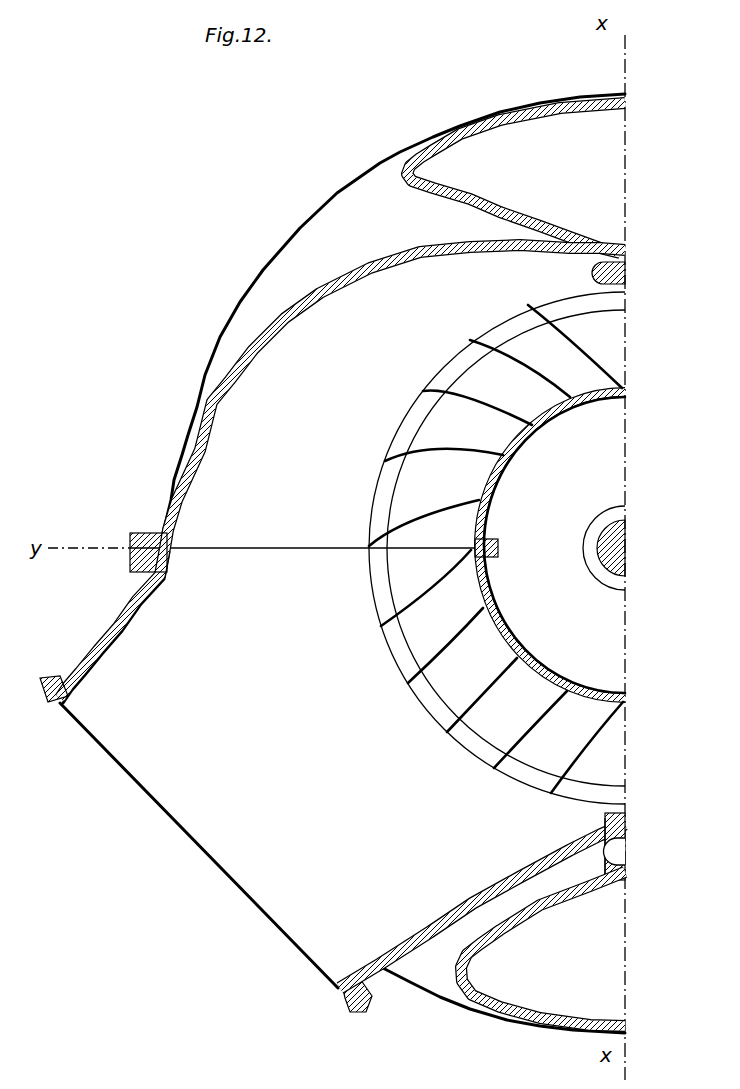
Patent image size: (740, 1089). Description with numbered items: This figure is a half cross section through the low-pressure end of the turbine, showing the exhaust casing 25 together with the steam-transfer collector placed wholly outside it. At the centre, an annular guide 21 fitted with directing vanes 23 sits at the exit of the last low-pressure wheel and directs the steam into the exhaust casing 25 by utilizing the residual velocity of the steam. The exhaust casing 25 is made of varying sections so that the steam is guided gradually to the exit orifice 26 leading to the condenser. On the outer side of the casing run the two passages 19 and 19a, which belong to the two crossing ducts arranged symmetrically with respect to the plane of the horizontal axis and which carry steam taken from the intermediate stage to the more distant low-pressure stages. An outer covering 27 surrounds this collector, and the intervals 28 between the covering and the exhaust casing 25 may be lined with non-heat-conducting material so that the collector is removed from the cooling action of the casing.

The passage 19 is at (513, 113).
The passage 19a is at (542, 904).
The annular guide 21 is at (496, 488).
The directing vanes 23 is at (478, 398).
The exhaust casing 25 is at (238, 352).
The exit orifice 26 is at (210, 846).
The outer covering 27 is at (338, 192).
The intervals 28 is at (386, 231).